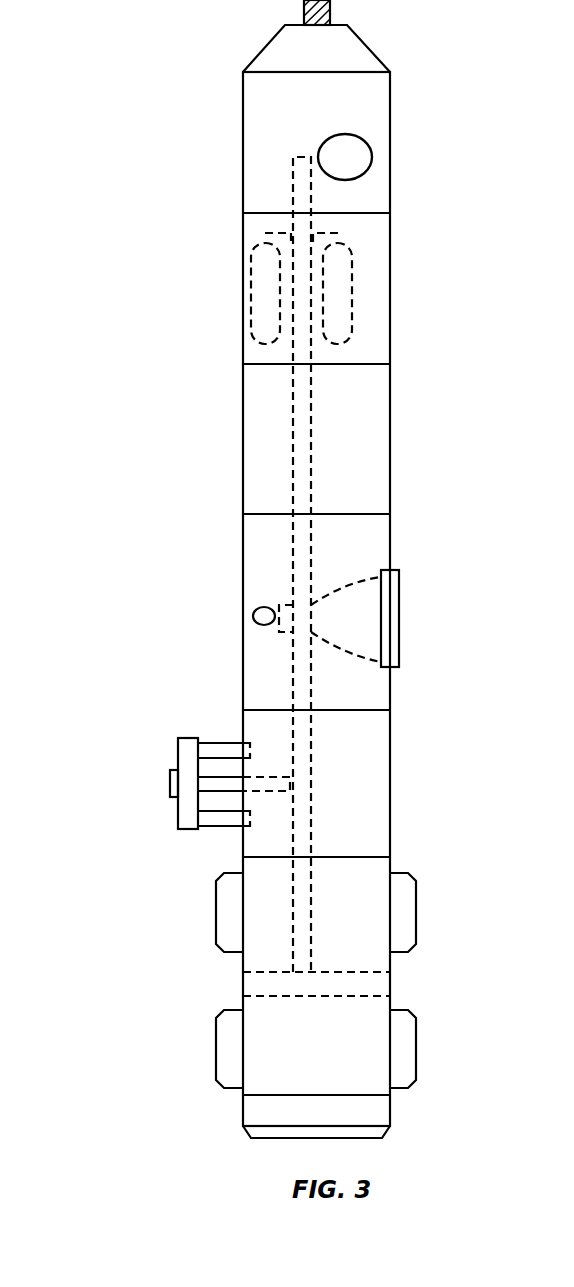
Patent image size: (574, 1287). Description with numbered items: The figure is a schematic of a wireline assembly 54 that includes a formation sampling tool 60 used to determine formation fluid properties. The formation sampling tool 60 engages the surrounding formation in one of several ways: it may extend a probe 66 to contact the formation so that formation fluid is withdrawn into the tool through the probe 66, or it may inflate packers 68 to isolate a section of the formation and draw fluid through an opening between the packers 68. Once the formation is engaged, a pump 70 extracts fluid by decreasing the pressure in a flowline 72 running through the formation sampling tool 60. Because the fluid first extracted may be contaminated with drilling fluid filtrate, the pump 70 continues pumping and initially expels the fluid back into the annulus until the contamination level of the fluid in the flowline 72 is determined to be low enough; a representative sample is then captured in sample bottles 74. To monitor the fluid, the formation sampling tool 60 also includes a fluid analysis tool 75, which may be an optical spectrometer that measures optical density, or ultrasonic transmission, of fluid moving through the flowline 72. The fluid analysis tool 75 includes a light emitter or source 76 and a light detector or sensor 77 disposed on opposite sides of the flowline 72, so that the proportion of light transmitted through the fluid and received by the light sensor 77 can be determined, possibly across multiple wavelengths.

The wireline assembly 54 is at (170, 102).
The formation sampling tool 60 is at (84, 1113).
The probe 66 is at (177, 757).
The packers 68 is at (416, 893).
The pump 70 is at (372, 148).
The flowline 72 is at (292, 565).
The sample bottles 74 is at (251, 278).
The fluid analysis tool 75 is at (363, 667).
The light emitter or source 76 is at (257, 627).
The light detector or sensor 77 is at (400, 615).